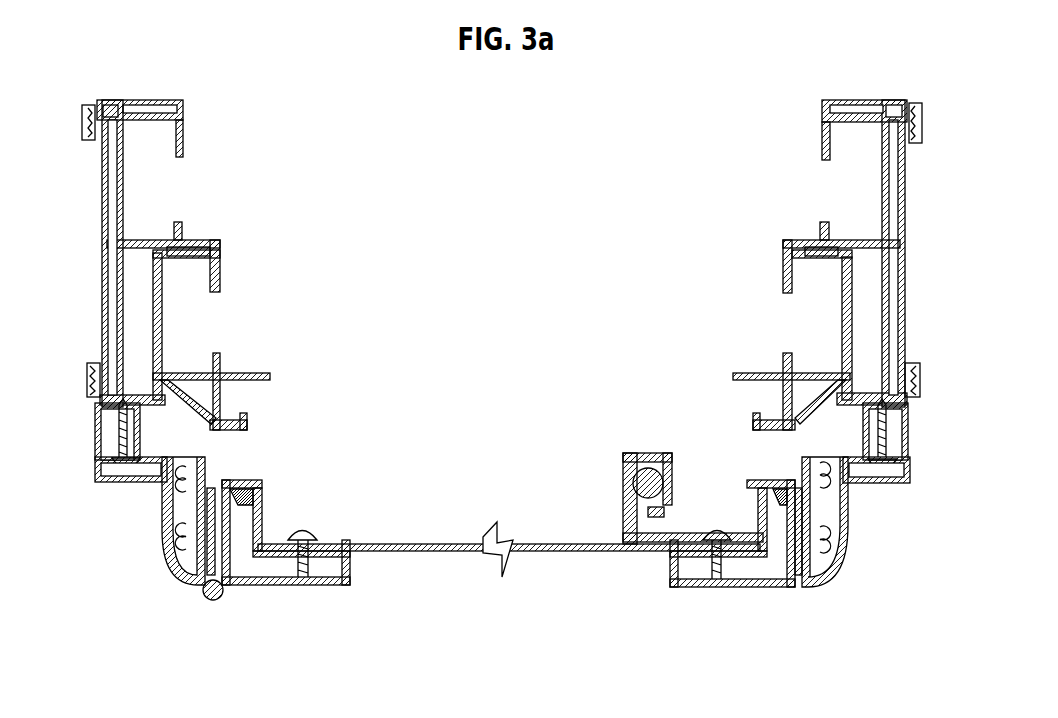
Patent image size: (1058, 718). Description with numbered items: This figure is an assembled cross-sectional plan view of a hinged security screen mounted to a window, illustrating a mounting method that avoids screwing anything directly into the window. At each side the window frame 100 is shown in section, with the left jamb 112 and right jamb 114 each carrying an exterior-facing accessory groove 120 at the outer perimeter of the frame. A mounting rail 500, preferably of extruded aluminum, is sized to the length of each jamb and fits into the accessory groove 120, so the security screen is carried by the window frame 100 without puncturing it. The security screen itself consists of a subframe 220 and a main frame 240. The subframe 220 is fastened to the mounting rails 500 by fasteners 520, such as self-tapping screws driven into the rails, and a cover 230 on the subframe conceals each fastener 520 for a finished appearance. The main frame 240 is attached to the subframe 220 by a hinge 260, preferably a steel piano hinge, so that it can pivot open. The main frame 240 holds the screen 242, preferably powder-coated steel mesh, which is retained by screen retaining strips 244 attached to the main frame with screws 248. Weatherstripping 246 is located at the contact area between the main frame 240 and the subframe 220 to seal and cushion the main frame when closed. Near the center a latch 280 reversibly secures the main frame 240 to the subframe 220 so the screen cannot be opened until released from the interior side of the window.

The window frame 100 is at (302, 138).
The left jamb 112 is at (201, 238).
The right jamb 114 is at (880, 218).
The accessory groove 120 is at (98, 370).
The mounting rail 500 is at (97, 433).
The fastener 520 is at (118, 433).
The cover 230 is at (128, 483).
The subframe 220 is at (163, 513).
The hinge 260 is at (220, 600).
The main frame 240 is at (327, 584).
The screen 242 is at (437, 553).
The screen retaining strip 244 is at (333, 543).
The weatherstripping 246 is at (255, 498).
The screw 248 is at (315, 531).
The latch 280 is at (628, 498).